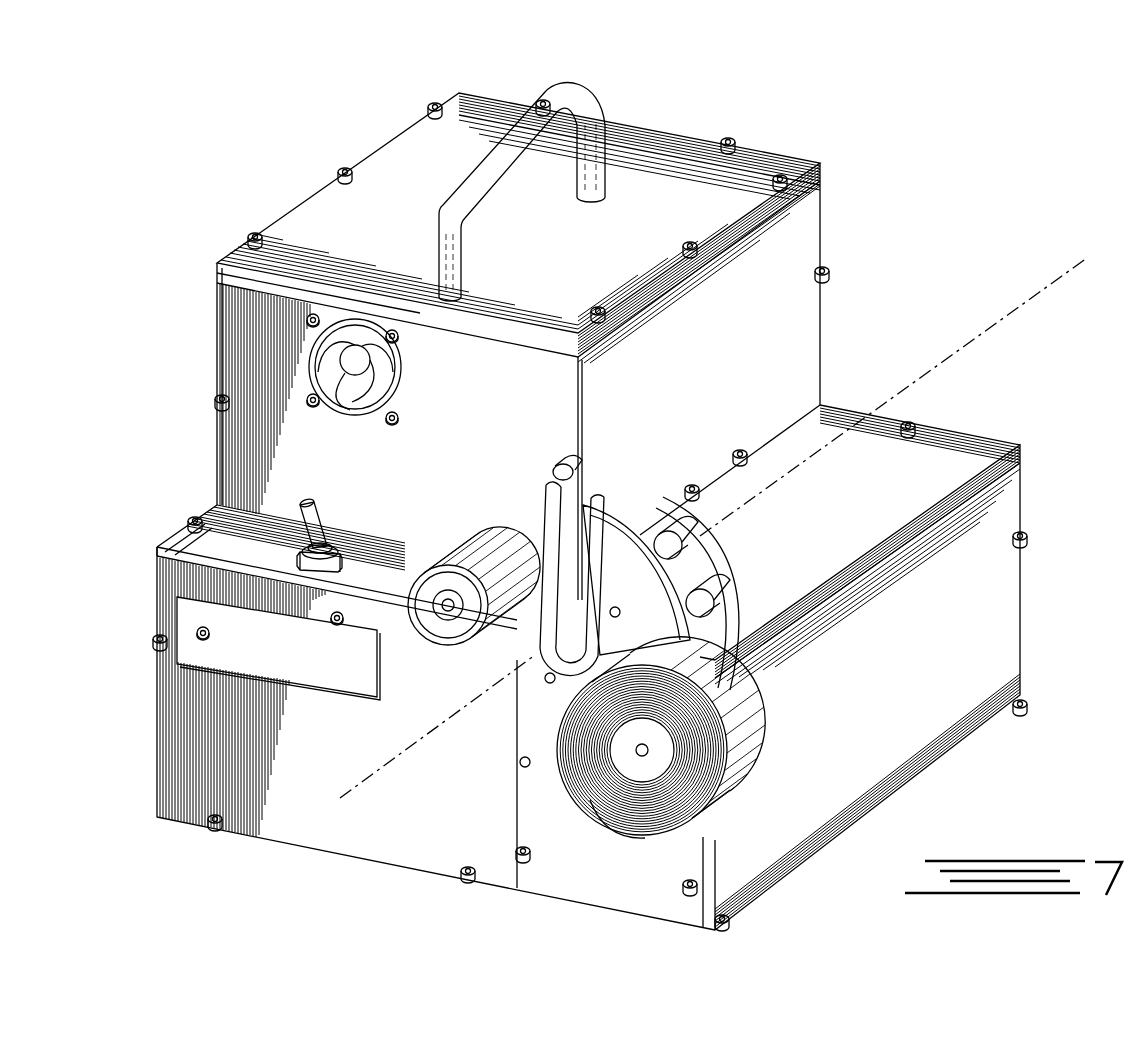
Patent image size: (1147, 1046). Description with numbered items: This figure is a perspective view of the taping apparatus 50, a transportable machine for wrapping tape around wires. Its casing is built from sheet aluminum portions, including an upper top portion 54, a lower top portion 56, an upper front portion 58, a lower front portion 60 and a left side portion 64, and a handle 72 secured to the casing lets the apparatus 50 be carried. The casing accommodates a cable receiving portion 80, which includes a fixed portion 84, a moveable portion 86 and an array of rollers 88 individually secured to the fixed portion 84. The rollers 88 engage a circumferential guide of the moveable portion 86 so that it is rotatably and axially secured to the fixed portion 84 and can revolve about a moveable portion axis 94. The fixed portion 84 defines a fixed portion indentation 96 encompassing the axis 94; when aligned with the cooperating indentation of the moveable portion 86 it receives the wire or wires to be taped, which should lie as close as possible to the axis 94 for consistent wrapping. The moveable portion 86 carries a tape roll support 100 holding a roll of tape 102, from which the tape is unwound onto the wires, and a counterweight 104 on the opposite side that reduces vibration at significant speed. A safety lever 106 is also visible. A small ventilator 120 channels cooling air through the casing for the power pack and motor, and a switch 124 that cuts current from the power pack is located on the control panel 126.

The taping apparatus 50 is at (868, 322).
The upper top portion 54 is at (556, 262).
The lower top portion 56 is at (831, 500).
The upper front portion 58 is at (711, 357).
The lower front portion 60 is at (901, 652).
The left side portion 64 is at (493, 407).
The handle 72 is at (498, 146).
The cable receiving portion 80 is at (547, 776).
The fixed portion 84 is at (743, 610).
The moveable portion 86 is at (525, 690).
The rollers 88 is at (575, 480).
The moveable portion axis 94 is at (538, 555).
The fixed portion indentation 96 is at (635, 505).
The tape roll support 100 is at (650, 738).
The roll of tape 102 is at (708, 760).
The counterweight 104 is at (440, 640).
The safety lever 106 is at (258, 657).
The ventilator 120 is at (355, 358).
The switch 124 is at (307, 500).
The control panel 126 is at (222, 527).